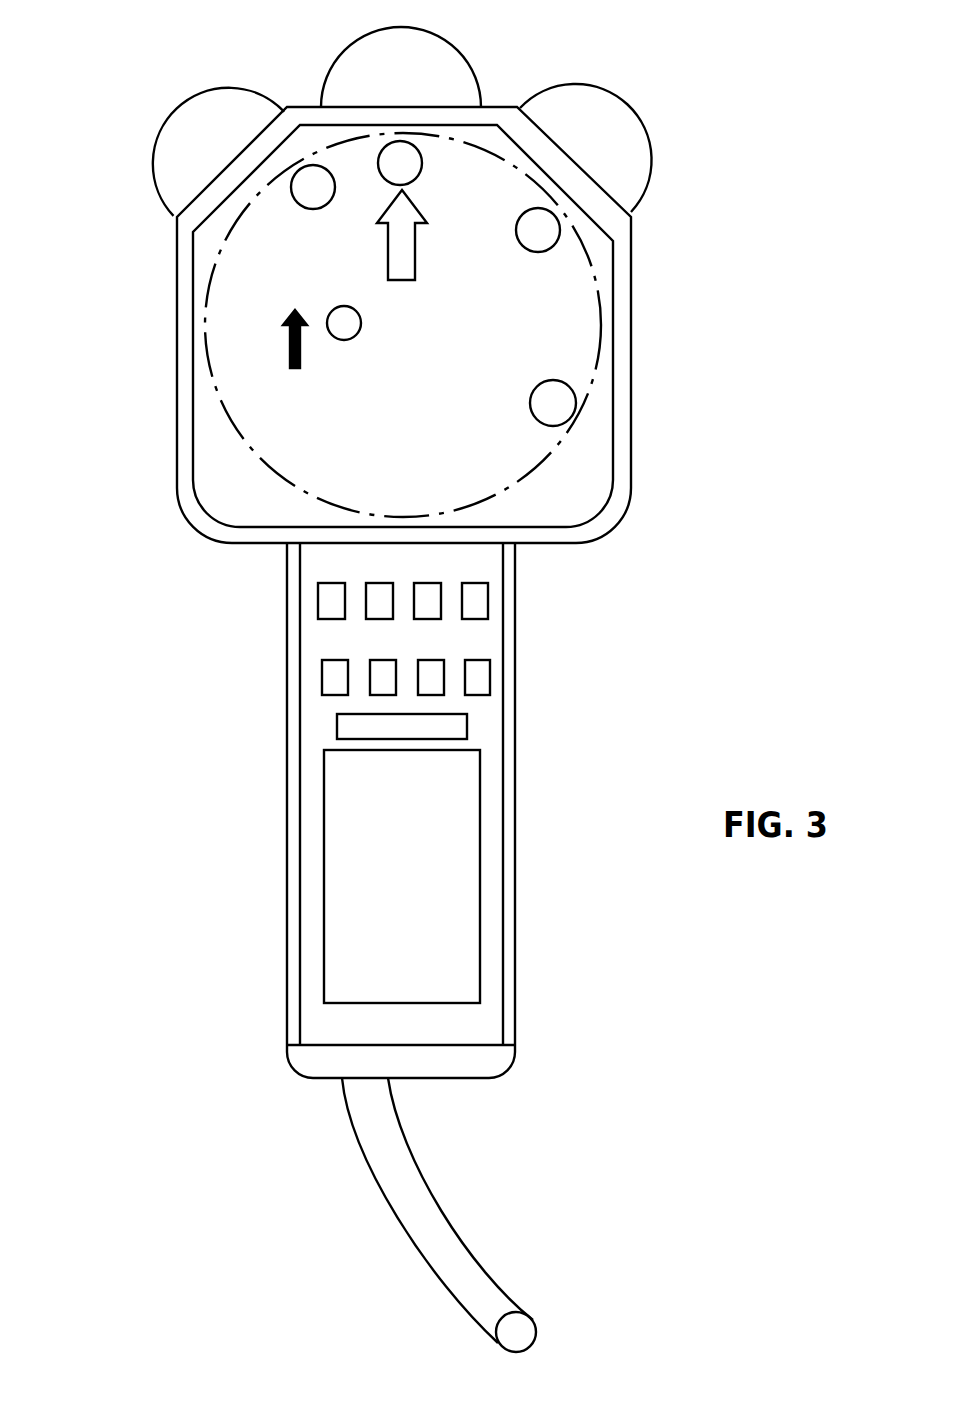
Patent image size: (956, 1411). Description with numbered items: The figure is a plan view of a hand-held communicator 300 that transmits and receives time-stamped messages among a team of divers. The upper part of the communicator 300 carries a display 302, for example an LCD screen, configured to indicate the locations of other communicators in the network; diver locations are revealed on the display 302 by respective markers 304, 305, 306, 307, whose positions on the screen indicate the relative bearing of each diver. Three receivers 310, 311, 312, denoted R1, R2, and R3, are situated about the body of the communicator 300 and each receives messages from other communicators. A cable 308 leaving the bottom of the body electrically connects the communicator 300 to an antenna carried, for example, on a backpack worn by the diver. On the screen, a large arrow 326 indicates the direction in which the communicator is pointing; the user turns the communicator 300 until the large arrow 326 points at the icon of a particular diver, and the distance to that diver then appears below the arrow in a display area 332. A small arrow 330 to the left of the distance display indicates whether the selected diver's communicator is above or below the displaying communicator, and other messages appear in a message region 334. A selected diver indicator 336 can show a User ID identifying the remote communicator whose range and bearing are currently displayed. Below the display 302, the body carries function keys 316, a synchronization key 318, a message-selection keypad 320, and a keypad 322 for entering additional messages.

The hand-held communicator 300 is at (695, 932).
The display 302 is at (543, 313).
The marker 304 is at (177, 213).
The marker 305 is at (393, 180).
The marker 306 is at (557, 228).
The marker 307 is at (576, 405).
The cable 308 is at (478, 1277).
The receiver 310 is at (183, 168).
The receiver 311 is at (413, 46).
The receiver 312 is at (620, 106).
The function keys 316 is at (493, 593).
The synchronization key 318 is at (337, 730).
The message-selection keypad 320 is at (493, 677).
The keypad 322 is at (481, 813).
The large arrow 326 is at (397, 230).
The small arrow 330 is at (403, 348).
The display area 332 is at (290, 357).
The message region 334 is at (400, 425).
The selected diver indicator 336 is at (362, 322).